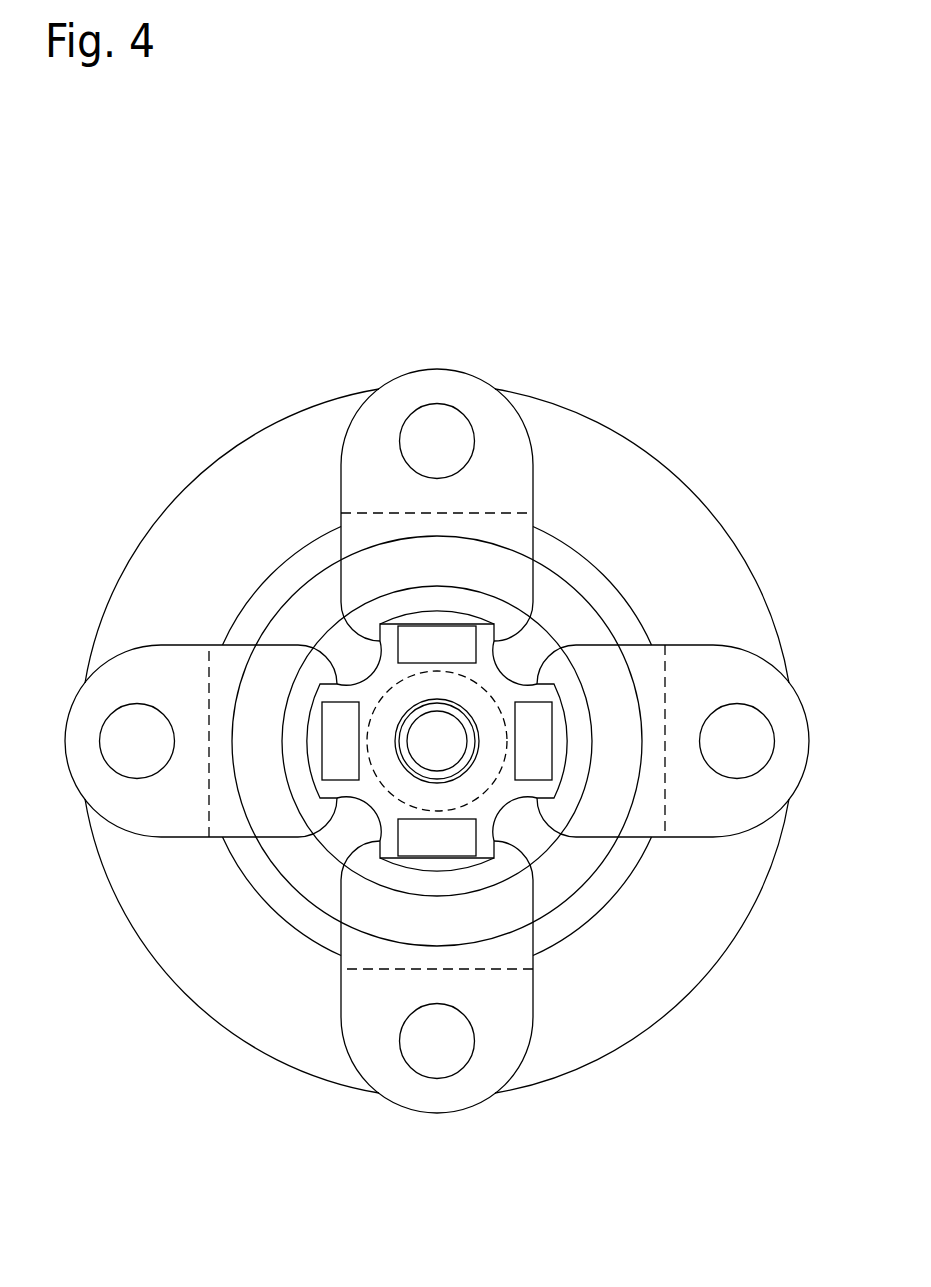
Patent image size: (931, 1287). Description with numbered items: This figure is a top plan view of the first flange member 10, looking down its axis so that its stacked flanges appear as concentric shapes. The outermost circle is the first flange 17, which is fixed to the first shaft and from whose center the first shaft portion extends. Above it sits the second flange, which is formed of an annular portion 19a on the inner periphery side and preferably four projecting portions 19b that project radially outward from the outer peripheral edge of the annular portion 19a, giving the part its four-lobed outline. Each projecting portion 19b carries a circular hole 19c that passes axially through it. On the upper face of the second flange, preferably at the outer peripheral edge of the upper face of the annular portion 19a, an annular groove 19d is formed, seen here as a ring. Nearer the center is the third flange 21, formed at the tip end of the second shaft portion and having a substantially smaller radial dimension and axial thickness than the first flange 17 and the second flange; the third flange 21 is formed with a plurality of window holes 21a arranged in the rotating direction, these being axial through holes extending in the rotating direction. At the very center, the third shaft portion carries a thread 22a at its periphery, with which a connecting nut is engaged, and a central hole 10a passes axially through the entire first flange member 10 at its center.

The first flange member 10 is at (456, 678).
The central hole 10a is at (458, 773).
The first flange 17 is at (650, 478).
The annular portion 19a is at (307, 620).
The projecting portions 19b is at (378, 407).
The circular holes 19c is at (432, 408).
The annular groove 19d is at (585, 628).
The third flange 21 is at (508, 627).
The window holes 21a is at (403, 627).
The thread 22a is at (400, 757).